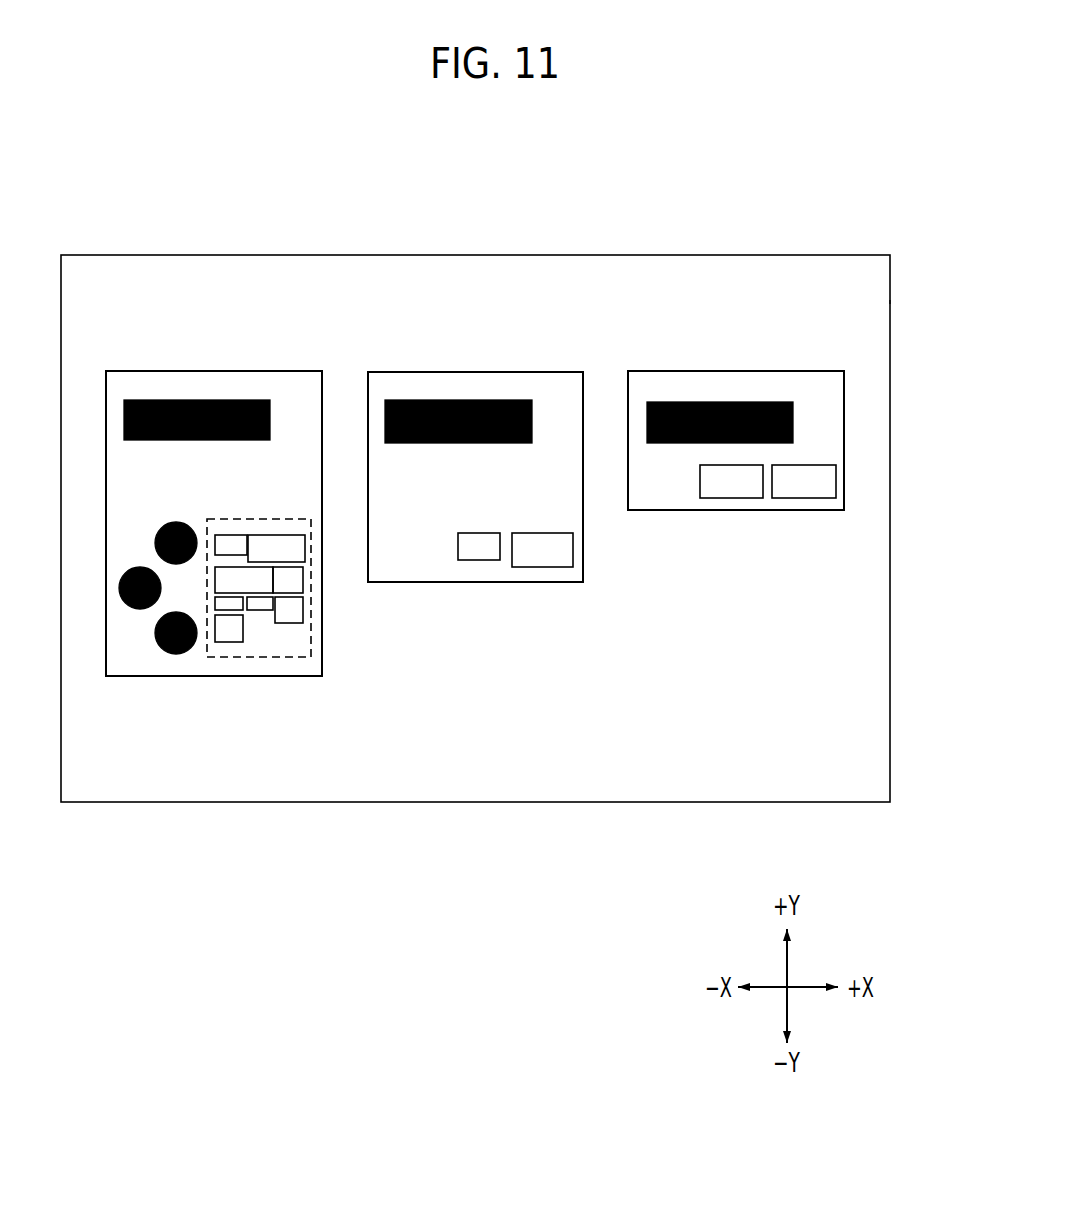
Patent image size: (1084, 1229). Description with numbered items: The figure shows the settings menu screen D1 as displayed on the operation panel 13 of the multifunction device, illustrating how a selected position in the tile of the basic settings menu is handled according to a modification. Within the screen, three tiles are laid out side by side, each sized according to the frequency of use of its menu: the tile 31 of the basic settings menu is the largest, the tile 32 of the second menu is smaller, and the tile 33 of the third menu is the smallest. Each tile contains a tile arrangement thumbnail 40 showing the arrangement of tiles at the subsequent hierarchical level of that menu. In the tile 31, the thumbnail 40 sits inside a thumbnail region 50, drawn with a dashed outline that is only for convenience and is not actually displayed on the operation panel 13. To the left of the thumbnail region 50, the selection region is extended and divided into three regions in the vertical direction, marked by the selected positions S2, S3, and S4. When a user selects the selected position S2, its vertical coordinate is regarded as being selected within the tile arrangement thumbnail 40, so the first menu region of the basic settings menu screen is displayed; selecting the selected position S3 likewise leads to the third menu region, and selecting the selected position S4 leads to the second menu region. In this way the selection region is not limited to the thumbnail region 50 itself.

The settings menu screen D1 is at (849, 163).
The operation panel 13 is at (891, 302).
The tile of the "basic settings" menu 31 is at (298, 371).
The tile of "menu 11" 32 is at (559, 372).
The tile of "menu 12" 33 is at (820, 371).
The tile arrangement thumbnail 40 is at (290, 668).
The thumbnail region 50 is at (225, 660).
The selected position S2 is at (155, 538).
The selected position S3 is at (119, 585).
The selected position S4 is at (155, 630).